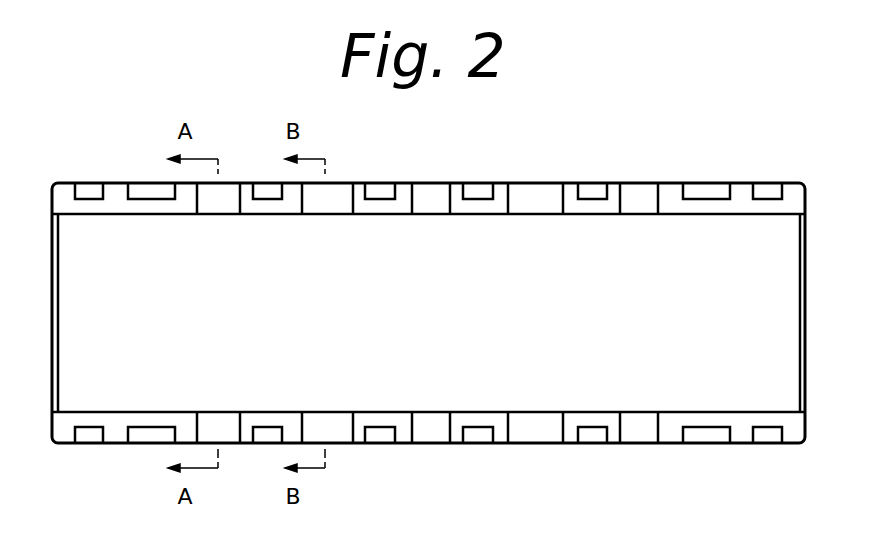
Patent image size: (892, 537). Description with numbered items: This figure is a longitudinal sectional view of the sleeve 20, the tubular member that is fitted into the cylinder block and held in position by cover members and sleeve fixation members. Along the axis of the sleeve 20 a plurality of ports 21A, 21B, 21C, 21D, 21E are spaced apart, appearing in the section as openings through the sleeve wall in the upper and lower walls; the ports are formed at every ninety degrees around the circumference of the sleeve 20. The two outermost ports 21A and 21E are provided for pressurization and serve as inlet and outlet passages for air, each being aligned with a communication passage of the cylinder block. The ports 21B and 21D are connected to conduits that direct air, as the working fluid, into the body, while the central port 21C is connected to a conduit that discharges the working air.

The sleeve 20 is at (496, 181).
The port 21A is at (230, 437).
The port 21B is at (342, 433).
The port 21C is at (430, 435).
The port 21D is at (538, 435).
The port 21E is at (635, 435).